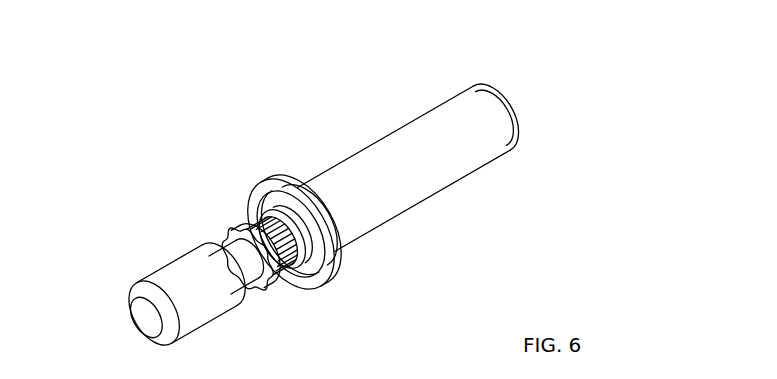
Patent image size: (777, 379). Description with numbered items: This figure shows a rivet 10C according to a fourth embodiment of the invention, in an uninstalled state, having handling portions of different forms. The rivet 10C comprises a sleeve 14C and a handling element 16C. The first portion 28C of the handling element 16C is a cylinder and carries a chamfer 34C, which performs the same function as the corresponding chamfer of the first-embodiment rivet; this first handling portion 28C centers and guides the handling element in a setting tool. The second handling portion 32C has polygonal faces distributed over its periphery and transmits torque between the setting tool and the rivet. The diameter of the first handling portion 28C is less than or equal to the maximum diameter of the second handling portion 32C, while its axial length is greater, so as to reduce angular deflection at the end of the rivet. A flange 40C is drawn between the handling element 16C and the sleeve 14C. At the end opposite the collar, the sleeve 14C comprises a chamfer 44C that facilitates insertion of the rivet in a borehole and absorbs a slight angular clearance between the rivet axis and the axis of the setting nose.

The rivet 10C is at (317, 215).
The sleeve 14C is at (404, 169).
The handling element 16C is at (239, 263).
The first handling portion 28C is at (196, 288).
The second handling portion 32C is at (261, 252).
The chamfer 34C is at (153, 313).
The flange 40C is at (294, 232).
The chamfer 44C is at (501, 113).